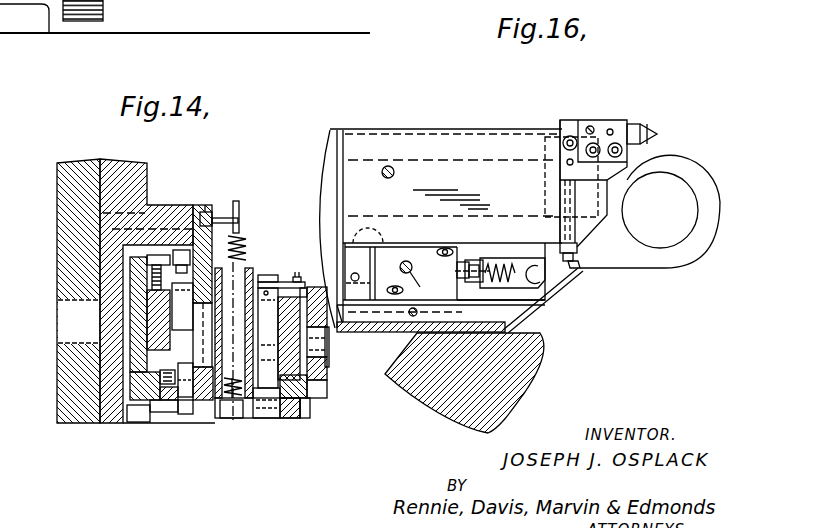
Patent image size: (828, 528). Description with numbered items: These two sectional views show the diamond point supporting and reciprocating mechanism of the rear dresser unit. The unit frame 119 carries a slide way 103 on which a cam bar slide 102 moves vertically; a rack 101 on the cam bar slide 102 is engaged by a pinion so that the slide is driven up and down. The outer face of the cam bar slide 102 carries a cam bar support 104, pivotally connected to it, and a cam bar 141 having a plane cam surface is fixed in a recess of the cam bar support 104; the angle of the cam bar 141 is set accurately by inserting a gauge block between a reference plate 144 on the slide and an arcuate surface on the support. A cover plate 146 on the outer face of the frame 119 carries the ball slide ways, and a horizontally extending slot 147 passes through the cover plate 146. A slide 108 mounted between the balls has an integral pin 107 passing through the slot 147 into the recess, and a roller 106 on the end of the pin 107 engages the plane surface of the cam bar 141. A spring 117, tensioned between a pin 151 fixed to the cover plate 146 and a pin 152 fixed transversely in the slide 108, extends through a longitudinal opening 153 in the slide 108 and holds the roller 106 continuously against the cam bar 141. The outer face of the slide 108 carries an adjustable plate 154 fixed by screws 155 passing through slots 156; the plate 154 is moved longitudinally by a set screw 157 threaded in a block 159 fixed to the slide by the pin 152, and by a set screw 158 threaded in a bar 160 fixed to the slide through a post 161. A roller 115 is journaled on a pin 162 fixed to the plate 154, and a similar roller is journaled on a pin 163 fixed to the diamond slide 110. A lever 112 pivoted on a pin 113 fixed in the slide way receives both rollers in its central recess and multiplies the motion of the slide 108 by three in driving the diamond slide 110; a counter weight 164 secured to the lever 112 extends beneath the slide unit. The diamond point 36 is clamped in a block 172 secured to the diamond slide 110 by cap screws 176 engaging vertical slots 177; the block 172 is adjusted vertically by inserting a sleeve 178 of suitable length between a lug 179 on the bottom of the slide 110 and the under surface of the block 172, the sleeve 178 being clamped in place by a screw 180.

In FIG. 14, the unit frame 119 is at (148, 170).
In FIG. 14, the cover plate 146 is at (205, 205).
In FIG. 14, the pin 151 is at (228, 215).
In FIG. 16, the pin 151 is at (543, 285).
In FIG. 14, the spring 117 is at (248, 247).
In FIG. 16, the spring 117 is at (512, 265).
In FIG. 14, the adjustable plate 154 is at (326, 330).
In FIG. 16, the adjustable plate 154 is at (385, 295).
In FIG. 14, the bar 160 is at (268, 275).
In FIG. 16, the bar 160 is at (492, 244).
In FIG. 14, the post 161 is at (268, 278).
In FIG. 14, the set screw 158 is at (297, 277).
In FIG. 16, the set screw 158 is at (471, 262).
In FIG. 14, the pin 162 is at (297, 347).
In FIG. 16, the pin 162 is at (417, 287).
In FIG. 14, the roller 115 is at (327, 360).
In FIG. 14, the lever 112 is at (317, 383).
In FIG. 14, the set screw 157 is at (310, 390).
In FIG. 16, the set screw 157 is at (401, 268).
In FIG. 14, the block 159 is at (303, 417).
In FIG. 16, the block 159 is at (378, 249).
In FIG. 14, the slide 108 is at (282, 418).
In FIG. 16, the slide 108 is at (374, 296).
In FIG. 14, the longitudinal opening 153 is at (243, 415).
In FIG. 14, the pin 152 is at (232, 405).
In FIG. 16, the pin 152 is at (372, 253).
In FIG. 14, the pin 107 is at (203, 398).
In FIG. 14, the cam bar support 104 is at (185, 416).
In FIG. 14, the cam bar slide 102 is at (162, 413).
In FIG. 14, the reference plate 144 is at (147, 427).
In FIG. 14, the cam bar 141 is at (180, 352).
In FIG. 14, the rack 101 is at (140, 313).
In FIG. 14, the slide way 103 is at (140, 343).
In FIG. 14, the slot 147 is at (195, 308).
In FIG. 14, the roller 106 is at (196, 368).
In FIG. 16, the diamond slide 110 is at (408, 145).
In FIG. 16, the pin 163 is at (395, 175).
In FIG. 16, the cap screws 176 is at (561, 134).
In FIG. 16, the vertical slots 177 is at (570, 128).
In FIG. 16, the block 172 is at (567, 122).
In FIG. 16, the diamond point 36 is at (643, 130).
In FIG. 16, the screws 155 is at (447, 248).
In FIG. 16, the slots 156 is at (447, 272).
In FIG. 16, the sleeve 178 is at (586, 230).
In FIG. 16, the lug 179 is at (578, 253).
In FIG. 16, the screw 180 is at (578, 270).
In FIG. 16, the pin 113 is at (414, 317).
In FIG. 16, the counter weight 164 is at (405, 383).